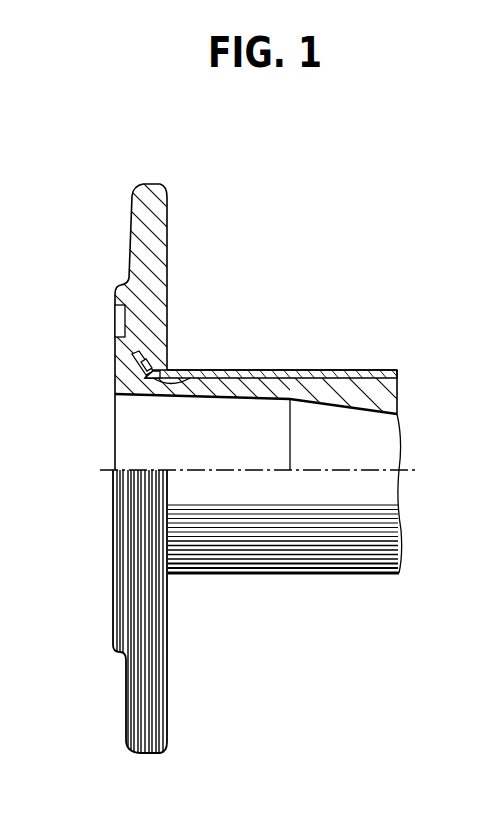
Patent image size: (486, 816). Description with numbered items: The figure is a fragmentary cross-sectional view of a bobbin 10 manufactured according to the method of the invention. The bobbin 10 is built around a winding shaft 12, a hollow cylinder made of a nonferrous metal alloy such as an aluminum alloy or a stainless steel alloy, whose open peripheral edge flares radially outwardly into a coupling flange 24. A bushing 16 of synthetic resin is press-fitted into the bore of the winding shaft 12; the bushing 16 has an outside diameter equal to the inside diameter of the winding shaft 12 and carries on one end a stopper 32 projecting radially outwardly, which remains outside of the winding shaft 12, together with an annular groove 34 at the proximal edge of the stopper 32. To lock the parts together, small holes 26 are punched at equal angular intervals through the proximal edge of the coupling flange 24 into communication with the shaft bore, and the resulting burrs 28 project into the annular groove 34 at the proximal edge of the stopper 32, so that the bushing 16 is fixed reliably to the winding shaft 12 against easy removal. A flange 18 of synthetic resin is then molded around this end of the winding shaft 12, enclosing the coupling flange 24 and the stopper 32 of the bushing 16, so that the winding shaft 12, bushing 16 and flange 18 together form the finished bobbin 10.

The bobbin 10 is at (318, 346).
The winding shaft 12 is at (361, 368).
The bushing 16 is at (377, 400).
The flange 18 is at (147, 306).
The coupling flange 24 is at (143, 366).
The small holes 26 is at (168, 367).
The burrs 28 is at (222, 369).
The stopper 32 is at (135, 380).
The annular groove 34 is at (113, 404).